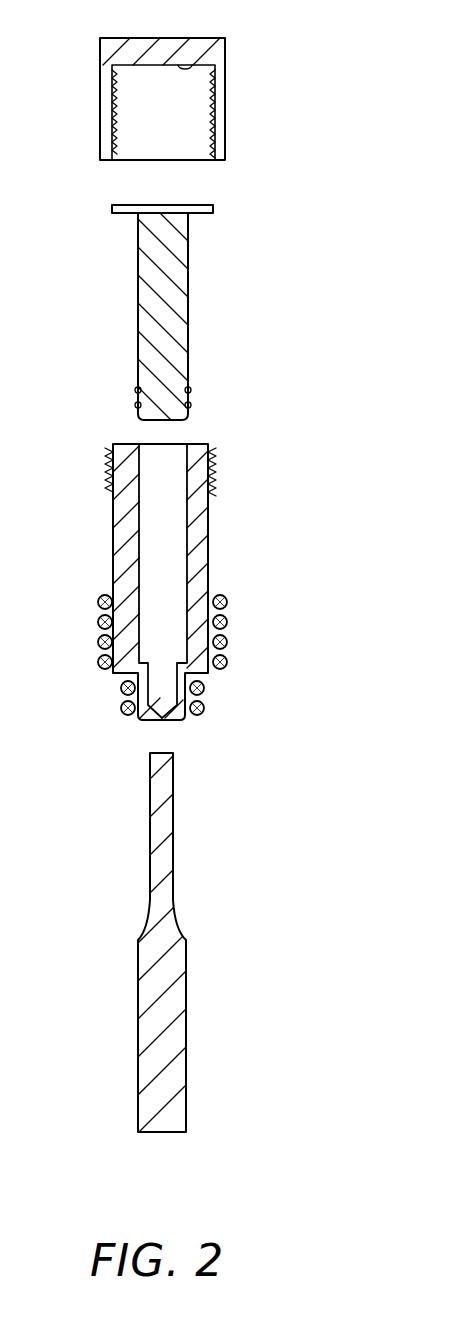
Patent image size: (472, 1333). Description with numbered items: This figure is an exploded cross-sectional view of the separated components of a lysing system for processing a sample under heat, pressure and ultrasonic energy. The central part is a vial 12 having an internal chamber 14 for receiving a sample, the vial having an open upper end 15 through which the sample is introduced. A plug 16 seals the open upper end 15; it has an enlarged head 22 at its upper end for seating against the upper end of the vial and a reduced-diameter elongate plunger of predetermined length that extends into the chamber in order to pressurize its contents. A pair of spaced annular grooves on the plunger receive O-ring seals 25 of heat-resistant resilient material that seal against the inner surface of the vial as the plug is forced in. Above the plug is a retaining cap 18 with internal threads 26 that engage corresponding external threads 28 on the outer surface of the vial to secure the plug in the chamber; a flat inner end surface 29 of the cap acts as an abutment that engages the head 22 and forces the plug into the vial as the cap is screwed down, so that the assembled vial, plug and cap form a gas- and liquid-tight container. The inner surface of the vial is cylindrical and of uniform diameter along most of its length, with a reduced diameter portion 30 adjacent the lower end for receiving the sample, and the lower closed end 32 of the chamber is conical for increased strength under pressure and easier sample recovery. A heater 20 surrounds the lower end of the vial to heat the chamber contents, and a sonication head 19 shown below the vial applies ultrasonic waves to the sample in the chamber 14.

The vial 12 is at (198, 560).
The internal chamber 14 is at (190, 566).
The open upper end 15 is at (160, 468).
The plug 16 is at (188, 322).
The retaining cap 18 is at (225, 100).
The sonication head 19 is at (180, 966).
The heater 20 is at (163, 607).
The enlarged head 22 is at (213, 208).
The O-ring seals 25 is at (135, 405).
The internal threads 26 is at (108, 128).
The external threads 28 is at (216, 470).
The flat inner end surface 29 is at (195, 66).
The reduced diameter portion 30 is at (140, 688).
The lower closed end 32 is at (162, 720).